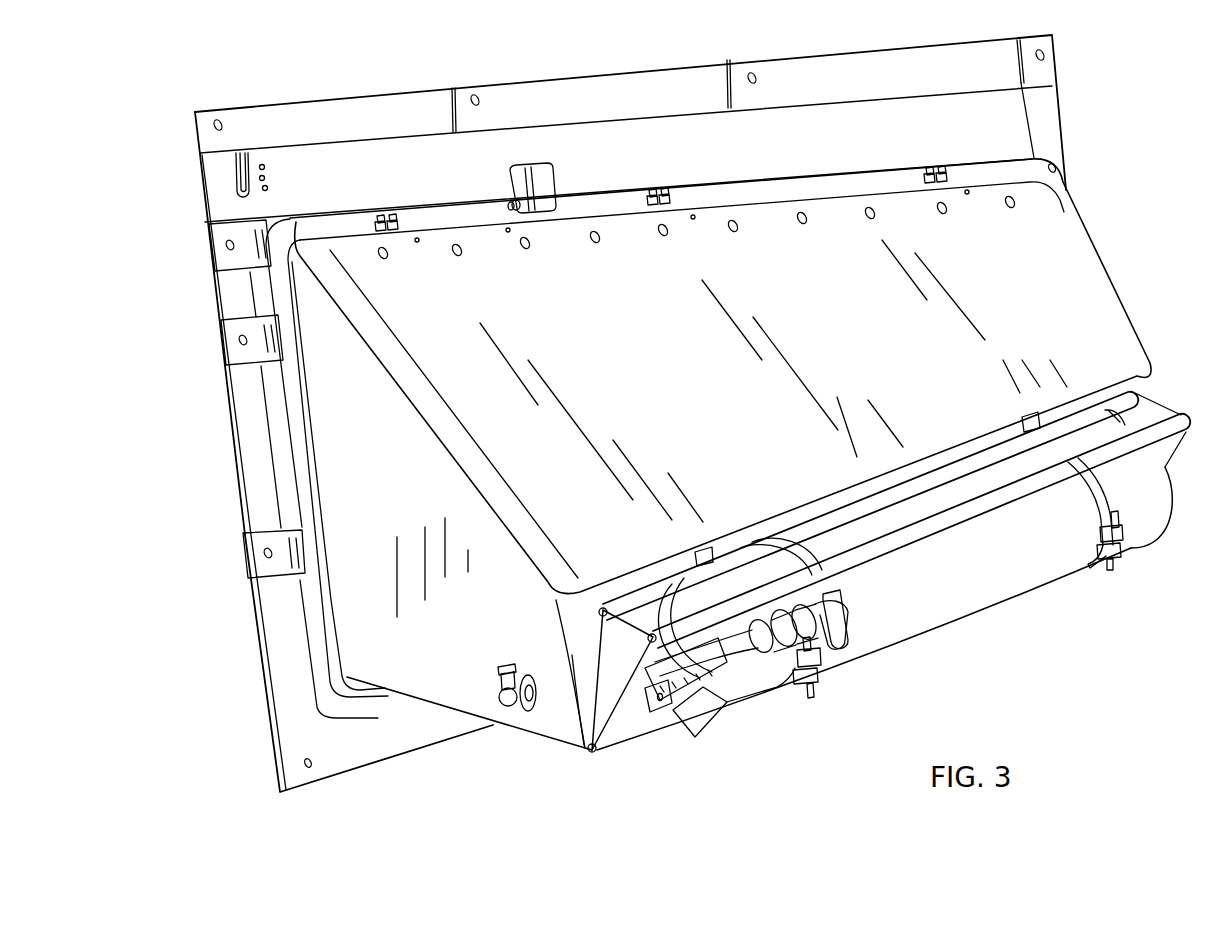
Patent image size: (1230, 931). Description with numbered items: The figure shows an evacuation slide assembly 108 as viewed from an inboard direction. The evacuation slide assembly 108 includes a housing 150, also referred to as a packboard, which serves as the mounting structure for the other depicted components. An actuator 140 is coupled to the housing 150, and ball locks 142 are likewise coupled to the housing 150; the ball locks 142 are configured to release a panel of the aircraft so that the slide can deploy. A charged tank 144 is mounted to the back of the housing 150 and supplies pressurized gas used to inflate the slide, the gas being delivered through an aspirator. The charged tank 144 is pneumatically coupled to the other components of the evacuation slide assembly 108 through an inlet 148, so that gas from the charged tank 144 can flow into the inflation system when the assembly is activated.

The evacuation slide assembly 108 is at (165, 101).
The actuator 140 is at (547, 180).
The ball locks 142 is at (925, 180).
The charged tank 144 is at (1143, 503).
The inlet 148 is at (510, 698).
The housing 150 is at (1067, 300).